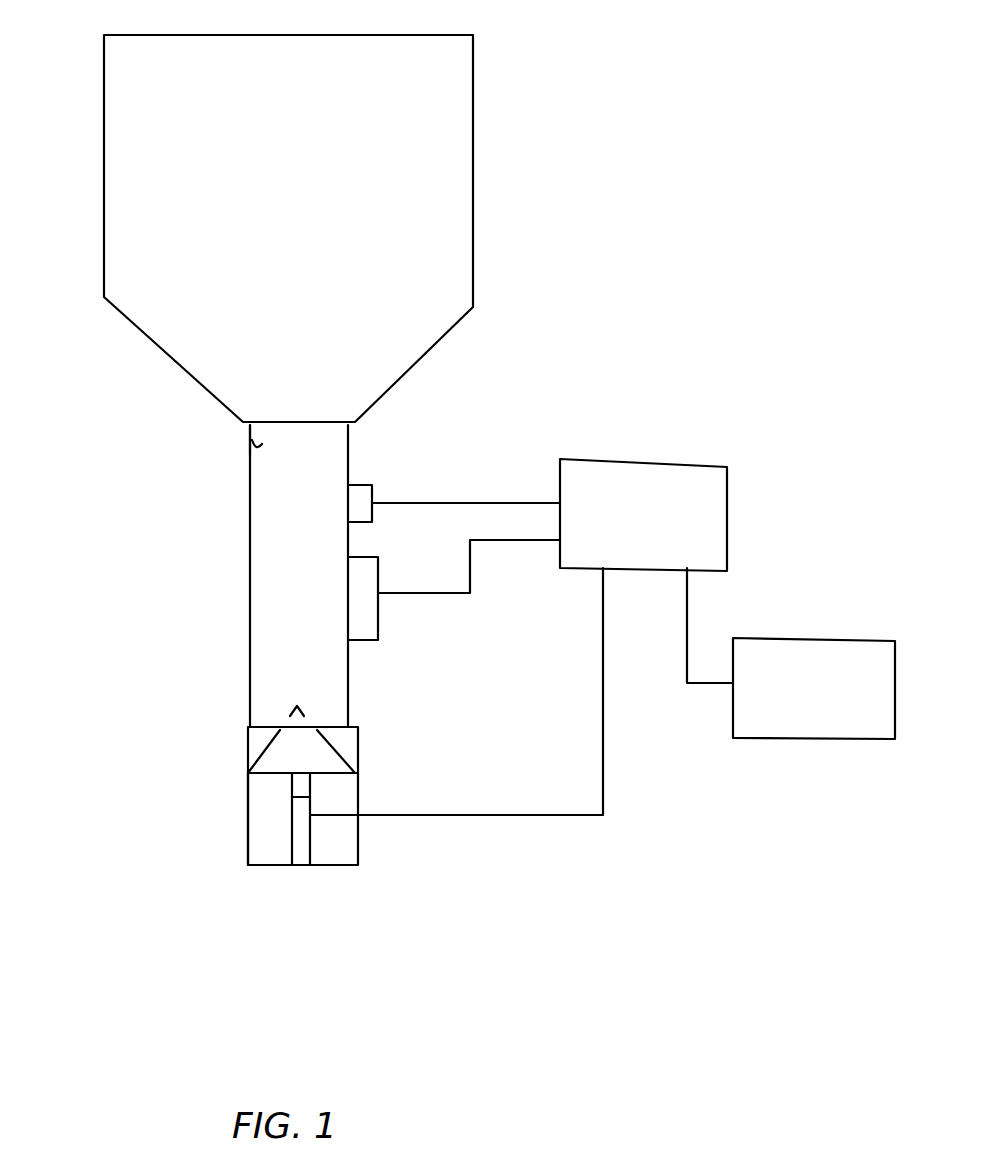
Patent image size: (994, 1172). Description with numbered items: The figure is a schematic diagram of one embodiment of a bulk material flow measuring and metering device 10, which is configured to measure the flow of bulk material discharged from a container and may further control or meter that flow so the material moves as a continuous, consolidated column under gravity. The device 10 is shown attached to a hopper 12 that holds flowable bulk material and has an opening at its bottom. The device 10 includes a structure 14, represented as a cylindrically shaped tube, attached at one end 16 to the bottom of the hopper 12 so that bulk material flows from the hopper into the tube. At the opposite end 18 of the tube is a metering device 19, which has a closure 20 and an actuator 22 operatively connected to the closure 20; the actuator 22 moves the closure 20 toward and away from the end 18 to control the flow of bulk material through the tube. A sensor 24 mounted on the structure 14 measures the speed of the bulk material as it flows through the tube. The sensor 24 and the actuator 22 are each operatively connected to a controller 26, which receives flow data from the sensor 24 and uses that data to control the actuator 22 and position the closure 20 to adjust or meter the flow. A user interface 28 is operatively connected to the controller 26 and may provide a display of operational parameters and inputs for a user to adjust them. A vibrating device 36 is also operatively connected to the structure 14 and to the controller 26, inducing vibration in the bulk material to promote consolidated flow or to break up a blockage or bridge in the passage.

The bulk material flow measuring and metering device 10 is at (136, 554).
The hopper 12 is at (457, 242).
The structure 14 is at (257, 600).
The end 16 is at (249, 450).
The opposite end 18 is at (250, 727).
The metering device 19 is at (248, 808).
The closure 20 is at (343, 750).
The actuator 22 is at (292, 835).
The sensor 24 is at (372, 503).
The controller 26 is at (705, 479).
The user interface 28 is at (810, 648).
The vibrating device 36 is at (378, 640).